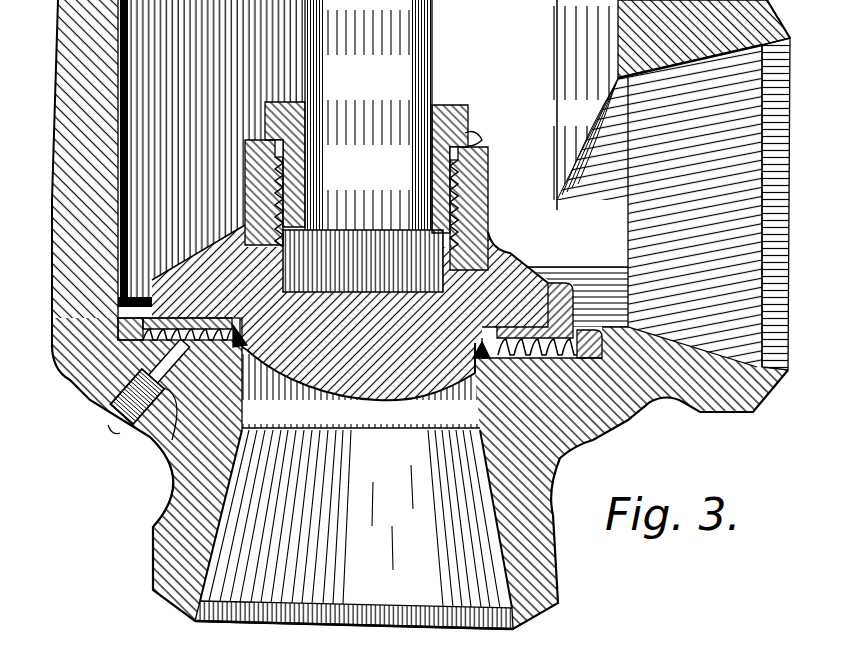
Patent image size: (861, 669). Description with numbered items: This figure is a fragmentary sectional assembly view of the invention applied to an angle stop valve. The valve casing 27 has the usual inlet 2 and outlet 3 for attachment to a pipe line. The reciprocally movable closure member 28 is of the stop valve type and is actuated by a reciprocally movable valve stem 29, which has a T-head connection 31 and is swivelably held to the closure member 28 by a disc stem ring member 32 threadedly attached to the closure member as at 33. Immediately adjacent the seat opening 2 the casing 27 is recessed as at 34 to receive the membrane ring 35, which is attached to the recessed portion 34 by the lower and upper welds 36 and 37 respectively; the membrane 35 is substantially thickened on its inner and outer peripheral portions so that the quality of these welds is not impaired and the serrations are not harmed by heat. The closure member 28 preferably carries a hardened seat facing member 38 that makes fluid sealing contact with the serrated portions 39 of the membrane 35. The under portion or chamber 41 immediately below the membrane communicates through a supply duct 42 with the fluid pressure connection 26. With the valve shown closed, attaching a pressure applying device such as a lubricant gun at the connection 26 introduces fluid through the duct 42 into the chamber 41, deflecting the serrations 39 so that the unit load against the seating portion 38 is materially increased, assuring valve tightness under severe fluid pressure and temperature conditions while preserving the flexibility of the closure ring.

The inlet 2 is at (298, 598).
The outlet 3 is at (785, 372).
The fluid pressure connection 26 is at (123, 421).
The valve casing 27 is at (597, 444).
The closure member 28 is at (507, 233).
The valve stem 29 is at (432, 54).
The T-head connection 31 is at (295, 258).
The disc stem ring member 32 is at (265, 115).
The threaded attachment 33 is at (276, 197).
The recessed portion 34 is at (85, 388).
The membrane ring 35 is at (160, 318).
The lower weld 36 is at (289, 380).
The upper weld 37 is at (129, 285).
The hardened seat facing member 38 is at (579, 337).
The serrated portions 39 is at (540, 340).
The chamber 41 is at (272, 451).
The supply duct 42 is at (150, 440).